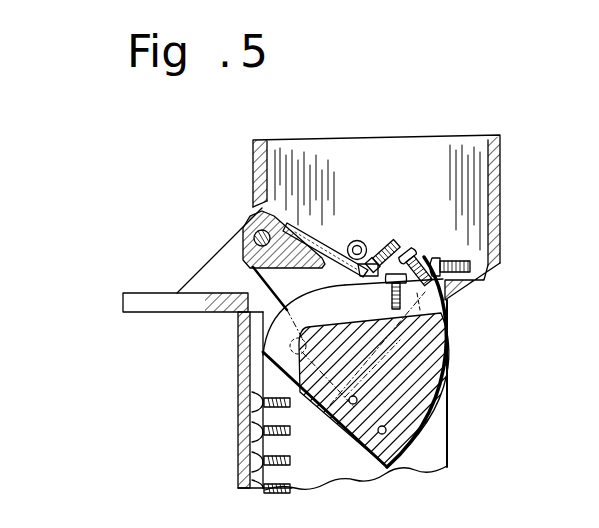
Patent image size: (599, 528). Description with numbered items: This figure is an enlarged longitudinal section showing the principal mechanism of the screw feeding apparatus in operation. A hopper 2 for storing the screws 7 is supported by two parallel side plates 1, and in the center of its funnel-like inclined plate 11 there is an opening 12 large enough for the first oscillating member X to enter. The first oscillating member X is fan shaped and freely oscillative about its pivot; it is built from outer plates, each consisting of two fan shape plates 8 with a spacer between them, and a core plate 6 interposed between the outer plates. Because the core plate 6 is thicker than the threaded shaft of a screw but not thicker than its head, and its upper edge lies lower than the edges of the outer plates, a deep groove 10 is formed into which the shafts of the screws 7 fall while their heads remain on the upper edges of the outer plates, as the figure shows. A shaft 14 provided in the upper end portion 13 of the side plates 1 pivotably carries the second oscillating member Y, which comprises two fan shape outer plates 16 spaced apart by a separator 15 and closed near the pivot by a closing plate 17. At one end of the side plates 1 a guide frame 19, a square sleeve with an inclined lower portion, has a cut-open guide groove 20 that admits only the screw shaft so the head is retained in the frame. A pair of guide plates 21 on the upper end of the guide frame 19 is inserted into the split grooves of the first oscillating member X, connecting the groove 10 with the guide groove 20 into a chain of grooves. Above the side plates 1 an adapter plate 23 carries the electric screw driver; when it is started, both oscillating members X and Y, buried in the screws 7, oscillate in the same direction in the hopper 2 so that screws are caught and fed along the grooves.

The side plates 1 is at (450, 458).
The hopper 2 is at (502, 150).
The core plate 6 is at (446, 362).
The screws 7 is at (404, 246).
The fan shape plates 8 is at (449, 302).
The deep groove 10 is at (383, 302).
The funnel-like inclined plate 11 is at (481, 285).
The opening 12 is at (437, 258).
The upper end portion 13 is at (202, 281).
The shaft 14 is at (255, 213).
The separator 15 is at (247, 259).
The fan shape outer plates 16 is at (280, 287).
The closing plate 17 is at (353, 240).
The guide frame 19 is at (243, 445).
The guide groove 20 is at (310, 488).
The guide plates 21 is at (268, 385).
The adapter plate 23 is at (148, 306).
The first oscillating member X is at (440, 417).
The second oscillating member Y is at (236, 232).